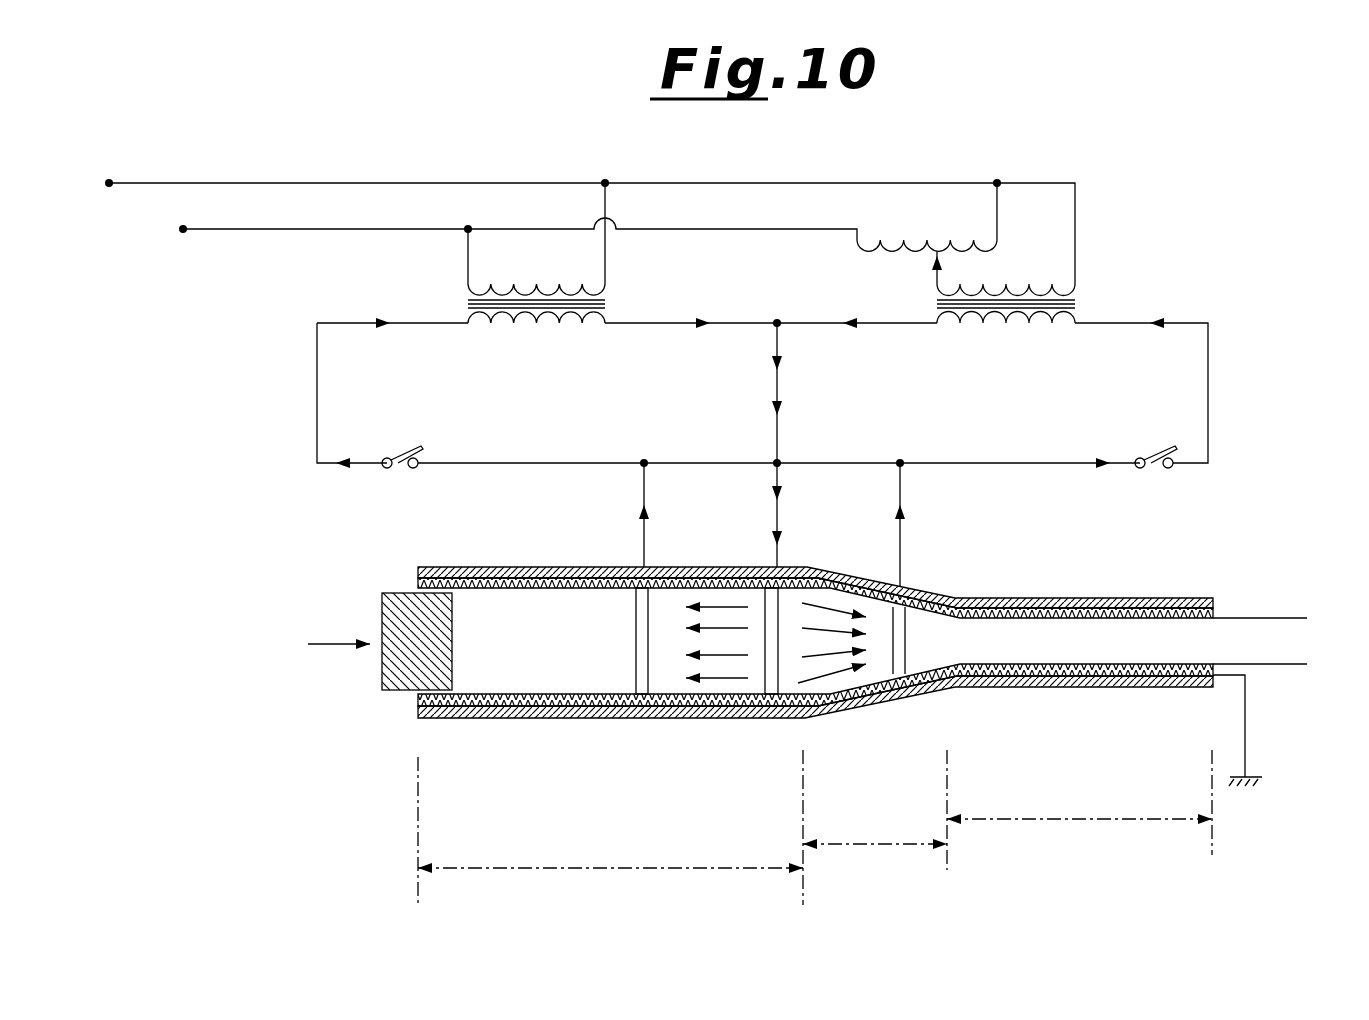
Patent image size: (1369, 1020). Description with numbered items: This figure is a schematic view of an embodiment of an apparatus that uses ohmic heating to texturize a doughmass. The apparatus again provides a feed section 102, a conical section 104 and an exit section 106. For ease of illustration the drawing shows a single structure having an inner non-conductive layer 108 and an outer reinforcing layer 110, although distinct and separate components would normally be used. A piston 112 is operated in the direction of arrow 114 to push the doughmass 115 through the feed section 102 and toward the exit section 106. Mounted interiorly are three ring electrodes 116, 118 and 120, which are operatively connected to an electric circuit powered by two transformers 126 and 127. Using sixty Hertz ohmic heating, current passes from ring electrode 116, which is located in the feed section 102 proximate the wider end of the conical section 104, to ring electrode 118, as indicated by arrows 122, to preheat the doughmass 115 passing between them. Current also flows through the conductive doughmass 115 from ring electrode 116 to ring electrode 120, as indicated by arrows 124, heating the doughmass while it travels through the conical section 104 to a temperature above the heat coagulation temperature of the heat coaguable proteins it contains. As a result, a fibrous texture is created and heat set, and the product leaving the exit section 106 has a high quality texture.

The feed section 102 is at (675, 868).
The conical section 104 is at (872, 845).
The exit section 106 is at (1093, 820).
The inner non-conductive layer 108 is at (1047, 615).
The outer reinforcing layer 110 is at (1173, 600).
The piston 112 is at (397, 673).
The arrow 114 is at (330, 643).
The doughmass 115 is at (492, 607).
The ring electrode 116 is at (772, 673).
The ring electrode 118 is at (617, 673).
The ring electrode 120 is at (898, 662).
The arrows 122 is at (705, 605).
The arrows 124 is at (833, 607).
The transformer 126 is at (458, 295).
The transformer 127 is at (1097, 288).